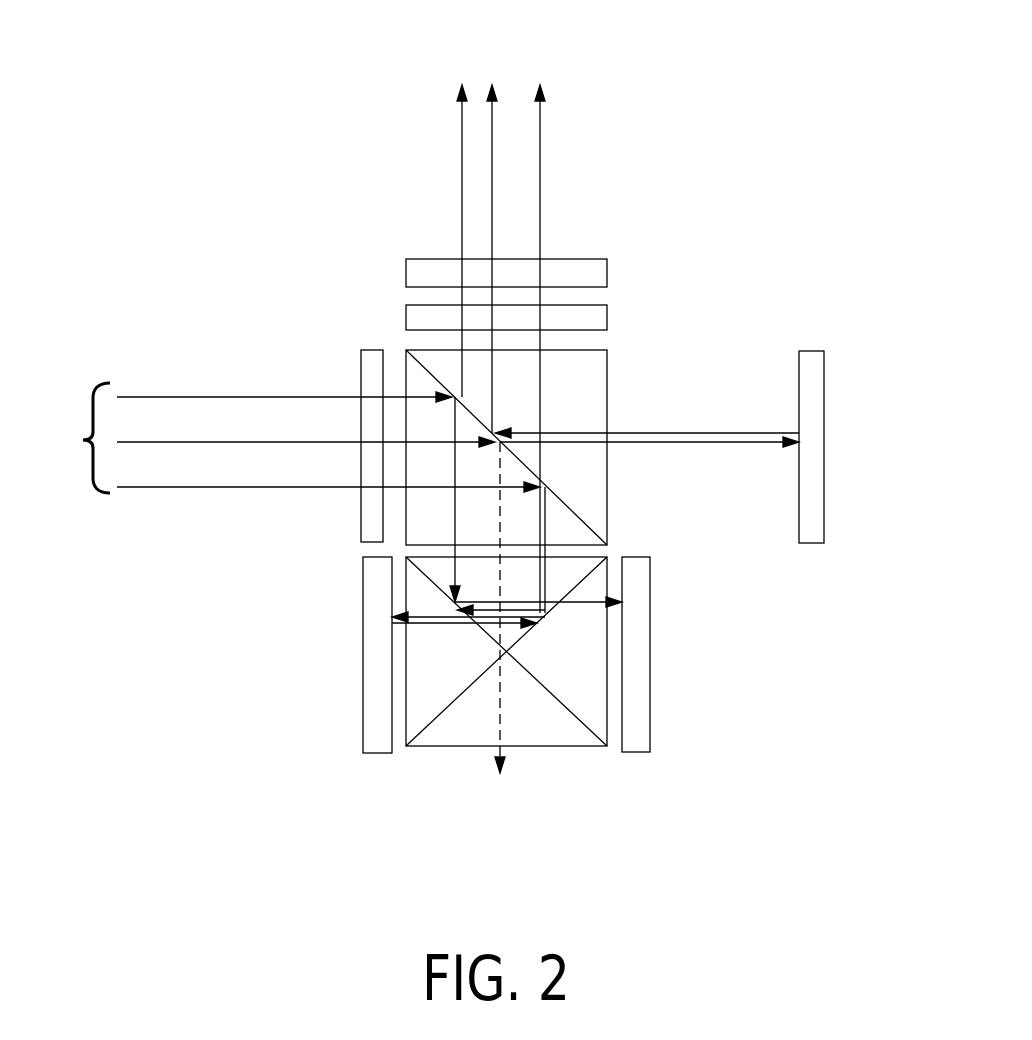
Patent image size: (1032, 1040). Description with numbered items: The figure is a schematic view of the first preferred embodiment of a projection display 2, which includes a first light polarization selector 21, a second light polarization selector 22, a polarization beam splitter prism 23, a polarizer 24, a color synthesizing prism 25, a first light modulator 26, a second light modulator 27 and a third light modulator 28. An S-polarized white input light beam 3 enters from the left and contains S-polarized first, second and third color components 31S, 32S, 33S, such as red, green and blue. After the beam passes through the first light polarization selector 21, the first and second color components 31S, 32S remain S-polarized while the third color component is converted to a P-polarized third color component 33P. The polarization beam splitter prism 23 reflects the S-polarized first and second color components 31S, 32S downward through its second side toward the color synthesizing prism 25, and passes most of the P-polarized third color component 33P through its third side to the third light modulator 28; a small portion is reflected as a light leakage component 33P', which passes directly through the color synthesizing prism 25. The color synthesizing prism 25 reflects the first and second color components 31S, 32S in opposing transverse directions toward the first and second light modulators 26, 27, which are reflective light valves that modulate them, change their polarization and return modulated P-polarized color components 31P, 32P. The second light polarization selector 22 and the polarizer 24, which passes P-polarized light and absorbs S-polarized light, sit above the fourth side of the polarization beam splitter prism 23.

The projection display 2 is at (720, 220).
The white input light beam 3 is at (292, 438).
The first light polarization selector 21 is at (367, 513).
The second light polarization selector 22 is at (410, 317).
The polarization beam splitter prism 23 is at (592, 505).
The polarizer 24 is at (410, 273).
The color synthesizing prism 25 is at (572, 737).
The first light modulator 26 is at (640, 683).
The second light modulator 27 is at (373, 703).
The third light modulator 28 is at (812, 403).
The S-polarized first color component 31S is at (145, 397).
The modulated P-polarized first color component 31P is at (462, 96).
The S-polarized second color component 32S is at (170, 487).
The modulated P-polarized second color component 32P is at (540, 96).
The S-polarized third color component 33S is at (183, 442).
The P-polarized third color component 33P is at (538, 267).
The light leakage component 33P' is at (456, 633).